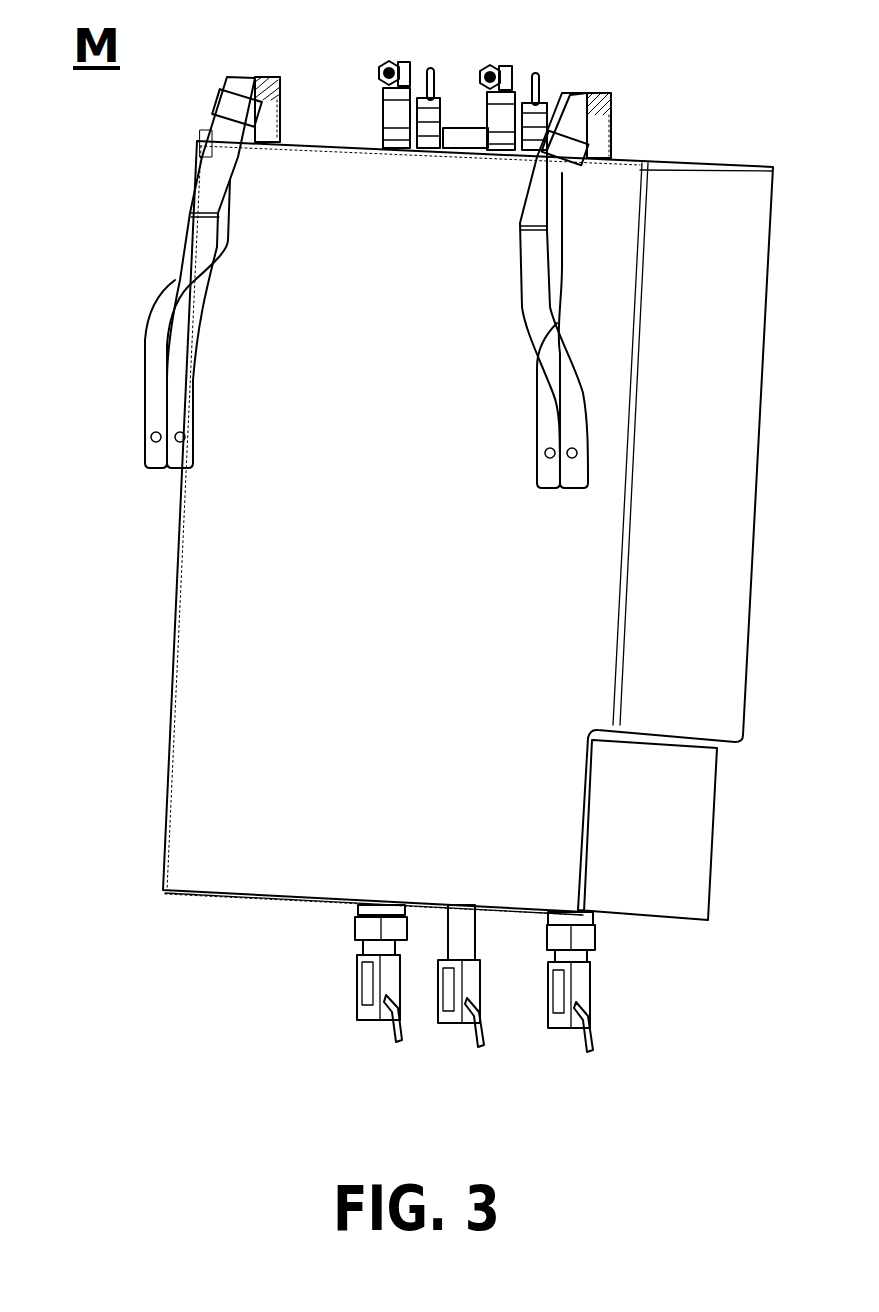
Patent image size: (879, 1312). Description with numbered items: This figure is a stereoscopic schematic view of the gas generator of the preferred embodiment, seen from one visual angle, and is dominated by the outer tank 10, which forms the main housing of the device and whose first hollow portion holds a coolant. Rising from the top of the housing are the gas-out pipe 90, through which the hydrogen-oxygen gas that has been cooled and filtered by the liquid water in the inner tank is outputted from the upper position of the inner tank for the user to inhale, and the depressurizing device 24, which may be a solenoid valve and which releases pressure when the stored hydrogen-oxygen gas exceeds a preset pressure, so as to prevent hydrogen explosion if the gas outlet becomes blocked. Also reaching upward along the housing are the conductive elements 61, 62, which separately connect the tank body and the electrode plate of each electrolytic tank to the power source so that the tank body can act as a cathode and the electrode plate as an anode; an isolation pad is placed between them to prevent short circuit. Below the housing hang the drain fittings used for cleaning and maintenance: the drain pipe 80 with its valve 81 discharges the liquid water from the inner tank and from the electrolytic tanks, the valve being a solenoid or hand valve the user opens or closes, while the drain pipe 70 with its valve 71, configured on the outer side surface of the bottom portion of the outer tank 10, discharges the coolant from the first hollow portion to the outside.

The outer tank 10 is at (170, 733).
The depressurizing device 24 is at (428, 70).
The conductive element 61 is at (168, 358).
The conductive element 62 is at (145, 405).
The drain pipe 70 is at (460, 930).
The valve 71 is at (480, 1045).
The drain pipe 80 is at (357, 1000).
The valve 81 is at (393, 1035).
The gas-out pipe 90 is at (385, 112).